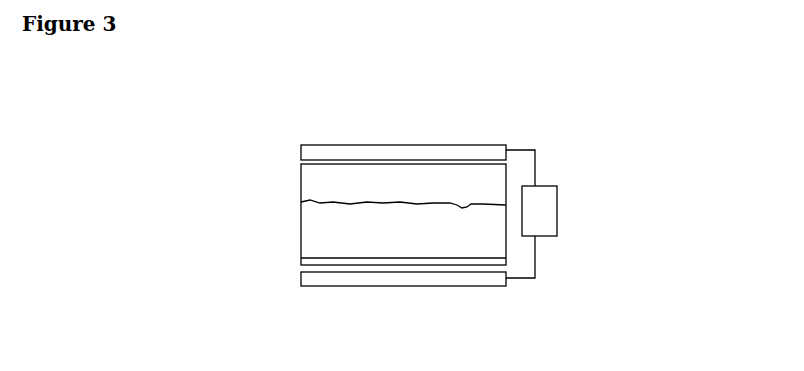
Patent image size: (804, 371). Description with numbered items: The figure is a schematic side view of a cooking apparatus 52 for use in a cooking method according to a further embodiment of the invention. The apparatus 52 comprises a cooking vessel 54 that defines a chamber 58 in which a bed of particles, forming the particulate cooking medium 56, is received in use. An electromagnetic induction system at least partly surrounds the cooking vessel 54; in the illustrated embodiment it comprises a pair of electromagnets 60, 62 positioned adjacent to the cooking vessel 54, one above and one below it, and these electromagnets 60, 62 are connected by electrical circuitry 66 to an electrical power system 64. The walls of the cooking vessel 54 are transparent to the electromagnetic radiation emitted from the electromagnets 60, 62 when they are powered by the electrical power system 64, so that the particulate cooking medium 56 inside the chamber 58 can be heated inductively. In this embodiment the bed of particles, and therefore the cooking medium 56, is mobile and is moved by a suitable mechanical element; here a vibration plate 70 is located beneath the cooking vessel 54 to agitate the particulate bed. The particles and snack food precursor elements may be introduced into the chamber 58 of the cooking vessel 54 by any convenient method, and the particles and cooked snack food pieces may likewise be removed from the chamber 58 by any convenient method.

The cooking apparatus 52 is at (152, 206).
The cooking vessel 54 is at (300, 182).
The particulate cooking medium 56 is at (327, 218).
The chamber 58 is at (420, 178).
The electromagnet 60 is at (348, 150).
The electromagnet 62 is at (323, 283).
The electrical power system 64 is at (547, 206).
The electrical circuitry 66 is at (535, 160).
The vibration plate 70 is at (485, 261).